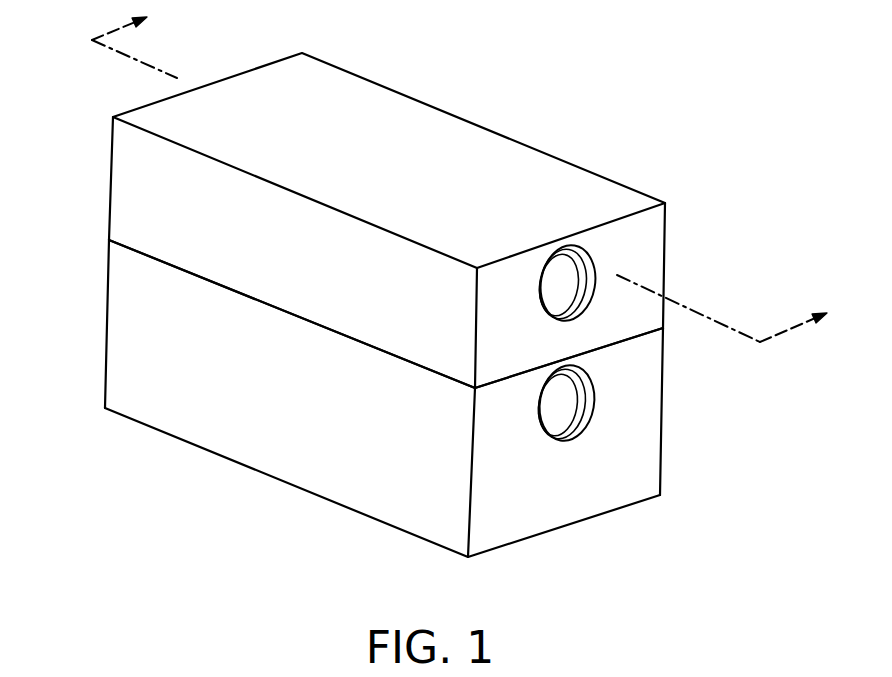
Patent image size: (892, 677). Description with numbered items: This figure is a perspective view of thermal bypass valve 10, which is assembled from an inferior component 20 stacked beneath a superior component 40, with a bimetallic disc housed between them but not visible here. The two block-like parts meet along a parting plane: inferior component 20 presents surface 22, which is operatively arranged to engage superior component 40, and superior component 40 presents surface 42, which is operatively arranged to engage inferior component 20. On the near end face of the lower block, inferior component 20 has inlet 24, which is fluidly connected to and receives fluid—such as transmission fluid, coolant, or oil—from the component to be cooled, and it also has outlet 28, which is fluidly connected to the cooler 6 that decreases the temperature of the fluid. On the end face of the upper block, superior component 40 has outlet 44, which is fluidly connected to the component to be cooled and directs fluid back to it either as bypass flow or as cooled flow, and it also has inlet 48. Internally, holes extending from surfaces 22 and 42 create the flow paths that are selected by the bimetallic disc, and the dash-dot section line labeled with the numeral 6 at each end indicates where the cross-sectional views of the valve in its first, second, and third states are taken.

The thermal bypass valve 10 is at (375, 286).
The superior component 40 is at (367, 214).
The inferior component 20 is at (361, 398).
The surface 42 is at (137, 250).
The surface 22 is at (150, 258).
The outlet 44 is at (570, 275).
The inlet 24 is at (606, 408).
The inlet 48 is at (100, 190).
The outlet 28 is at (100, 277).
The cooler 6 is at (470, 172).